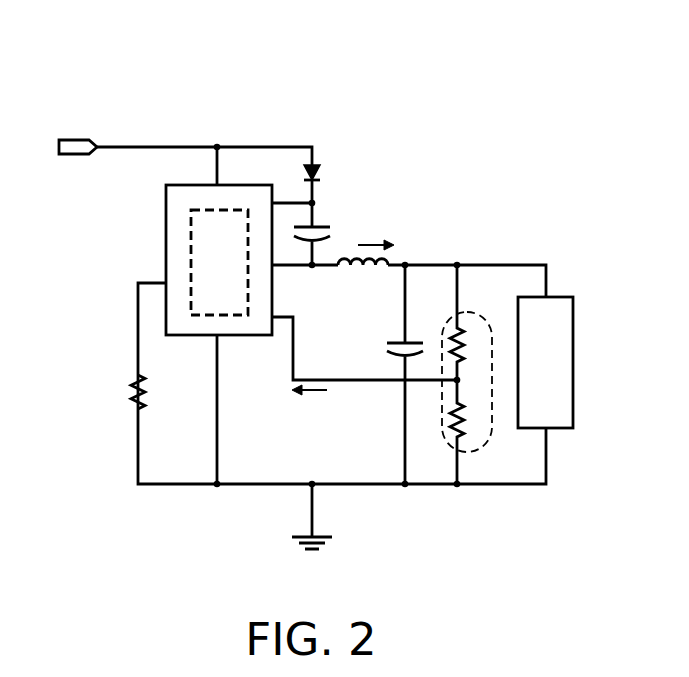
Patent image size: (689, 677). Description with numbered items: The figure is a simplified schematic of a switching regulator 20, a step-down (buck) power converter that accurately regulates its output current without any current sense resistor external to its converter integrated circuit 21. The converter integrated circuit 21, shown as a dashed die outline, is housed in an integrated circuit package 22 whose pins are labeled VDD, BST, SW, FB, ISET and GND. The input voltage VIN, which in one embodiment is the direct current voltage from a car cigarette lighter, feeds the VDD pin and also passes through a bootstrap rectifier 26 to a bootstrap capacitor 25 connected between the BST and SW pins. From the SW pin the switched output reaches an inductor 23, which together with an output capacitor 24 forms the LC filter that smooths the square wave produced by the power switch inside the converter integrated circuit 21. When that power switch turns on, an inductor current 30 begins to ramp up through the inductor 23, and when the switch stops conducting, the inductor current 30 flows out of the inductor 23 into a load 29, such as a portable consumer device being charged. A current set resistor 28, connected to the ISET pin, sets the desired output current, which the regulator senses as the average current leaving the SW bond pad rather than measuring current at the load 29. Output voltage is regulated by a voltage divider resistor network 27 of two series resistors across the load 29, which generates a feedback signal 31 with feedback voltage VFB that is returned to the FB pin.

The switching regulator 20 is at (429, 84).
The converter integrated circuit 21 is at (209, 269).
The integrated circuit package 22 is at (166, 244).
The inductor 23 is at (353, 268).
The output capacitor 24 is at (387, 348).
The bootstrap capacitor 25 is at (321, 232).
The bootstrap rectifier 26 is at (304, 172).
The voltage divider resistor network 27 is at (477, 449).
The current set resistor 28 is at (131, 387).
The load 29 is at (535, 362).
The inductor current 30 is at (376, 242).
The feedback signal 31 is at (316, 393).